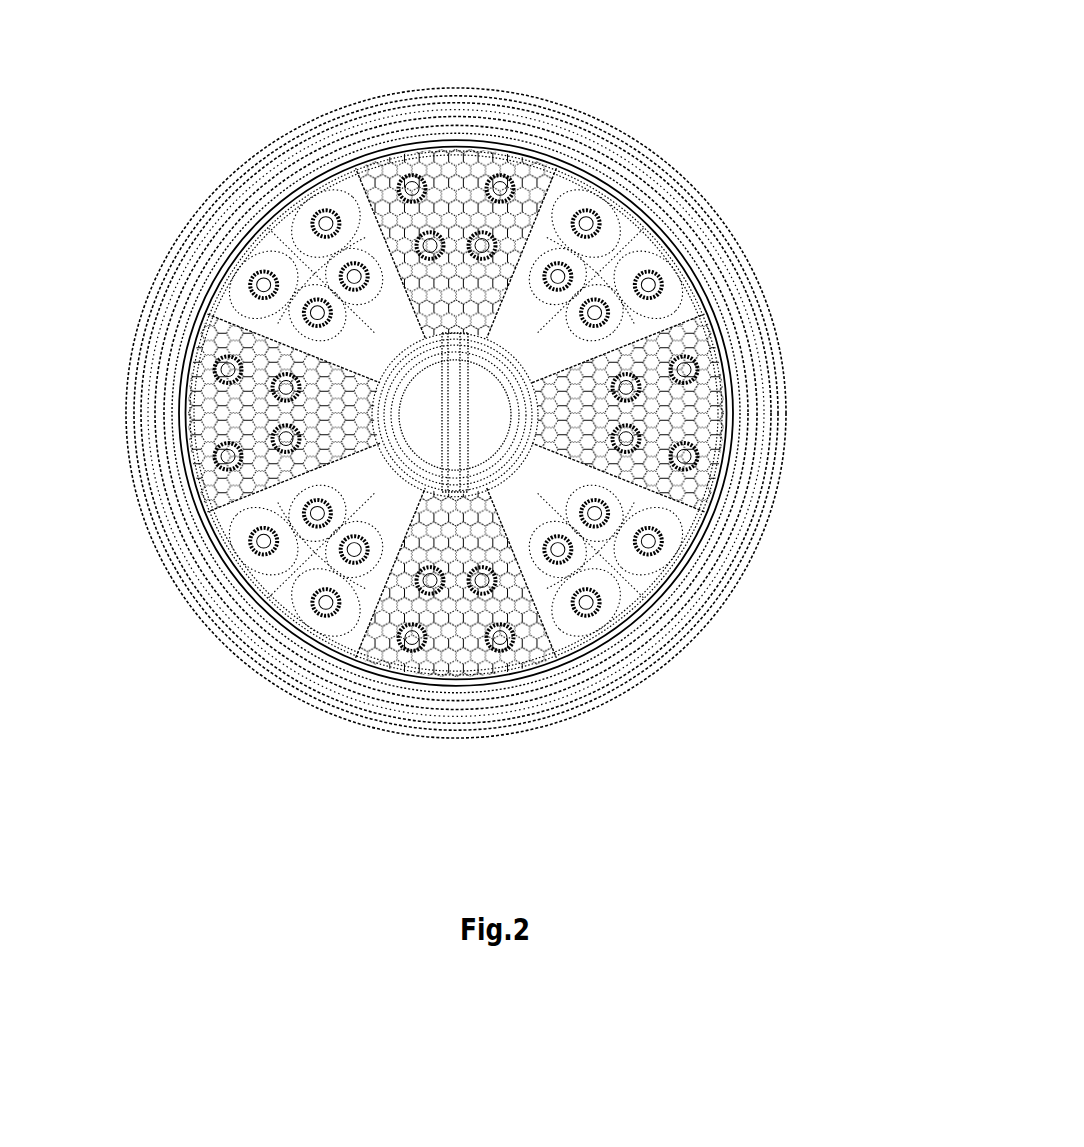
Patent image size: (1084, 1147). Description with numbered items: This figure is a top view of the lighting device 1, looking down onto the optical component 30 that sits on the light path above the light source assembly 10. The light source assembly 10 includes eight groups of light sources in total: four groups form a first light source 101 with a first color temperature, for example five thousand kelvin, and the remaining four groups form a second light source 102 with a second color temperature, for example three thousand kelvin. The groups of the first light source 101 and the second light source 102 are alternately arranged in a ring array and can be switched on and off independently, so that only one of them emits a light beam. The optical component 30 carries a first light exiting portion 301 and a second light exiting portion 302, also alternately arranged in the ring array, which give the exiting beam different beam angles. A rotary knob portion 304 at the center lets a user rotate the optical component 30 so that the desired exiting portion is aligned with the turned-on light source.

The lighting device 1 is at (756, 38).
The optical component 30 is at (255, 232).
The light source assembly 10 is at (873, 242).
The first light source 101 is at (652, 292).
The second light source 102 is at (680, 463).
The first light exiting portion 301 is at (207, 408).
The second light exiting portion 302 is at (290, 580).
The rotary knob portion 304 is at (460, 424).